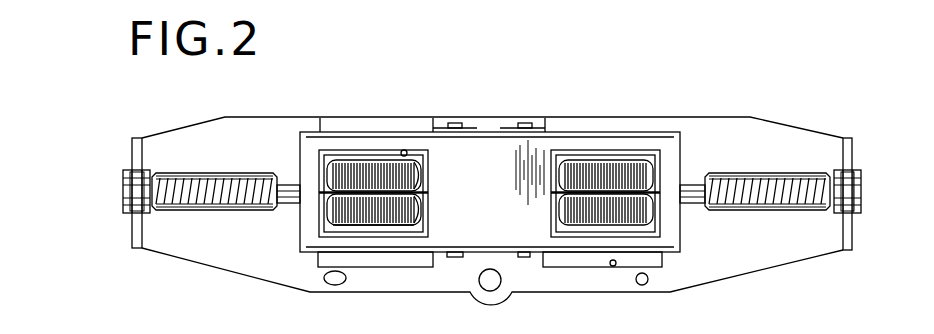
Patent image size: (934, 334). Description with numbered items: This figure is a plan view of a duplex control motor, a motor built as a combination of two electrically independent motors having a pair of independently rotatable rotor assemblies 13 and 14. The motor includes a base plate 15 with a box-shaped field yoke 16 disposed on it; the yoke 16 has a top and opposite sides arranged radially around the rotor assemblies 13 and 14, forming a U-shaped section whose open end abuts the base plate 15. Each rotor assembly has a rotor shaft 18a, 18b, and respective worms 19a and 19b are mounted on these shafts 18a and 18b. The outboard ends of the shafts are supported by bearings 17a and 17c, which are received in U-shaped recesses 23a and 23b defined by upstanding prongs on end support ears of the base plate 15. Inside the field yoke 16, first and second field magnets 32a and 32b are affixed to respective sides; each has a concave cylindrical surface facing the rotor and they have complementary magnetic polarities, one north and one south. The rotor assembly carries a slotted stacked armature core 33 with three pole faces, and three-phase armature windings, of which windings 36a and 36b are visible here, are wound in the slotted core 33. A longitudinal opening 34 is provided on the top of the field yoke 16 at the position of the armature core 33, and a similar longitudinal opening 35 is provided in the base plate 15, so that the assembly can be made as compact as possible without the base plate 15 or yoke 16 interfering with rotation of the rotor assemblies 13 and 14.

The rotor assembly 13 is at (403, 198).
The rotor assembly 14 is at (608, 150).
The base plate 15 is at (588, 293).
The field yoke 16 is at (507, 242).
The bearing 17a is at (124, 201).
The bearing 17c is at (860, 212).
The rotor shaft 18a is at (290, 206).
The rotor shaft 18b is at (690, 205).
The worm 19a is at (177, 211).
The worm 19b is at (803, 211).
The U-shaped recess 23a is at (124, 183).
The U-shaped recess 23b is at (862, 190).
The first field magnet 32a is at (343, 157).
The second field magnet 32b is at (364, 230).
The armature core 33 is at (397, 220).
The longitudinal opening 34 is at (415, 121).
The longitudinal opening 35 is at (614, 266).
The armature winding 36a is at (423, 175).
The armature winding 36b is at (423, 209).